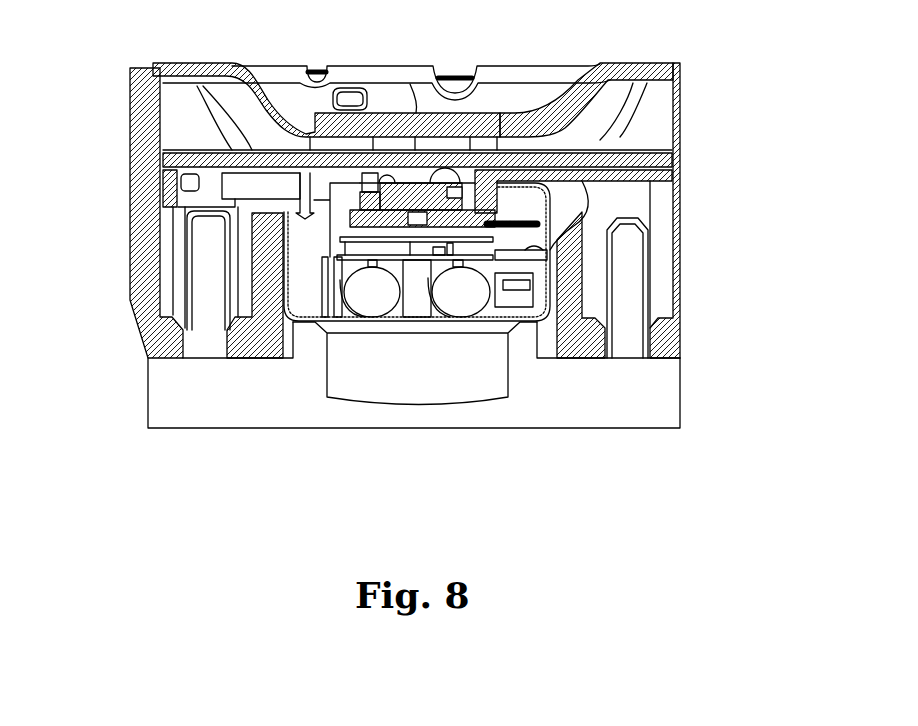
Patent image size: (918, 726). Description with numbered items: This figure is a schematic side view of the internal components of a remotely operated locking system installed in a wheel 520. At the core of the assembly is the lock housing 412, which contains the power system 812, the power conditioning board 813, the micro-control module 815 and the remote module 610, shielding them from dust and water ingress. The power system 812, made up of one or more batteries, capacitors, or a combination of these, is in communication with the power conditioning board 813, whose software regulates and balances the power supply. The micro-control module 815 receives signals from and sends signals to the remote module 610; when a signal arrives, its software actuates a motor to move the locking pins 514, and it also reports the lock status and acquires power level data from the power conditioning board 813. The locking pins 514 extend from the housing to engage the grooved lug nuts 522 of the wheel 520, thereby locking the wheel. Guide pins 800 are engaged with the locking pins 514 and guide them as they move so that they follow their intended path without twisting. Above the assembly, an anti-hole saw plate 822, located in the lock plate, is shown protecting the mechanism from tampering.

The lock housing 412 is at (305, 323).
The locking pins 514 is at (228, 170).
The wheel 520 is at (132, 303).
The grooved lug nuts 522 is at (200, 185).
The remote module 610 is at (680, 165).
The guide pins 800 is at (300, 213).
The power system 812 is at (490, 293).
The power conditioning board 813 is at (493, 258).
The micro-control module 815 is at (467, 240).
The anti-hole saw plate 822 is at (393, 155).